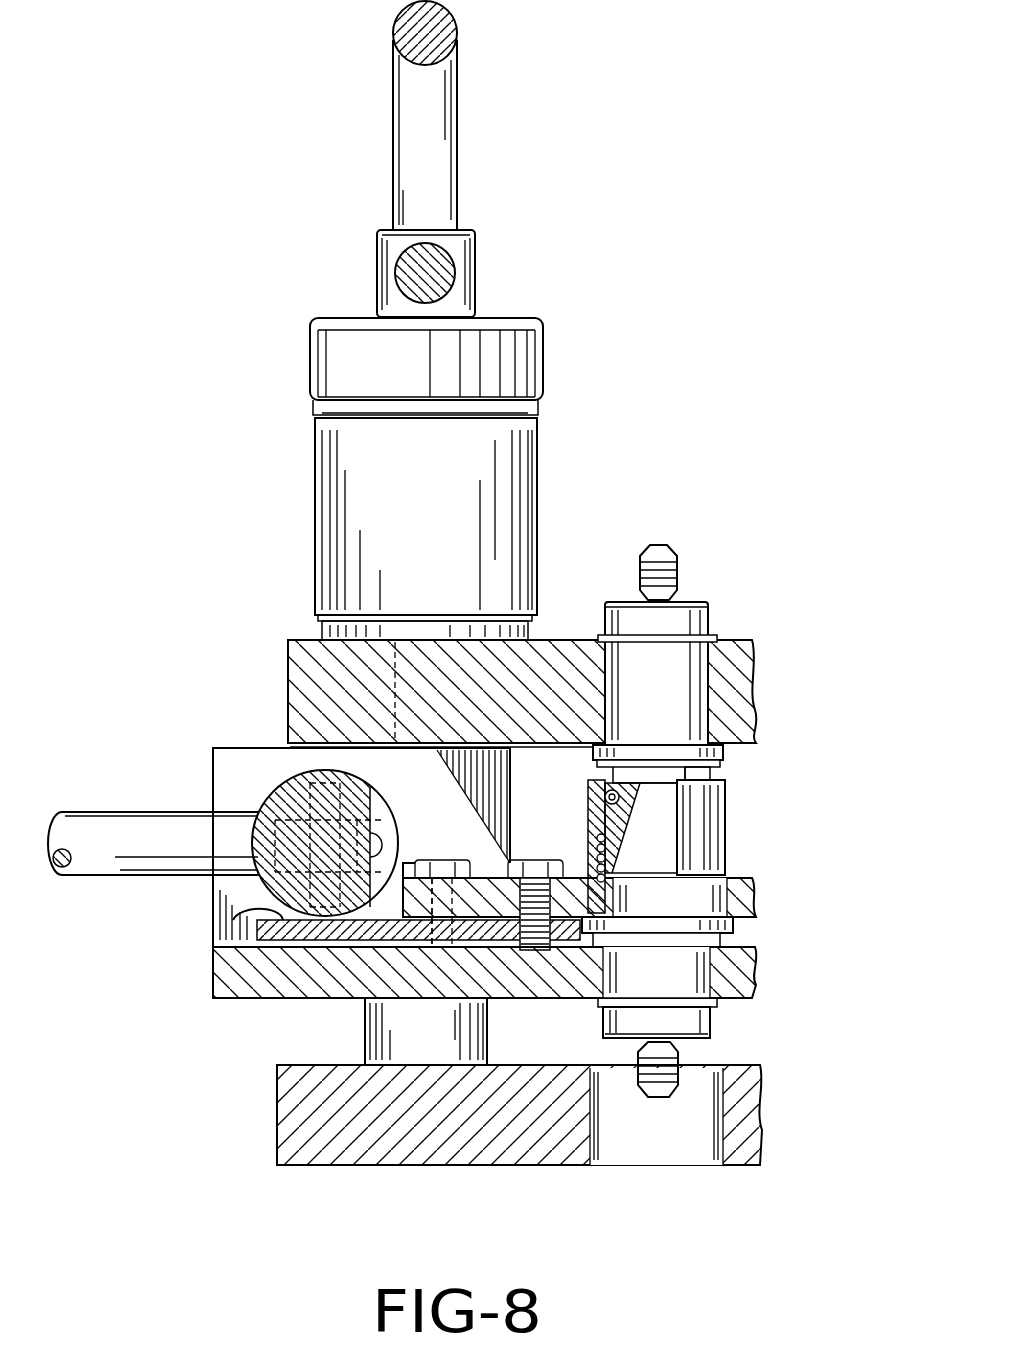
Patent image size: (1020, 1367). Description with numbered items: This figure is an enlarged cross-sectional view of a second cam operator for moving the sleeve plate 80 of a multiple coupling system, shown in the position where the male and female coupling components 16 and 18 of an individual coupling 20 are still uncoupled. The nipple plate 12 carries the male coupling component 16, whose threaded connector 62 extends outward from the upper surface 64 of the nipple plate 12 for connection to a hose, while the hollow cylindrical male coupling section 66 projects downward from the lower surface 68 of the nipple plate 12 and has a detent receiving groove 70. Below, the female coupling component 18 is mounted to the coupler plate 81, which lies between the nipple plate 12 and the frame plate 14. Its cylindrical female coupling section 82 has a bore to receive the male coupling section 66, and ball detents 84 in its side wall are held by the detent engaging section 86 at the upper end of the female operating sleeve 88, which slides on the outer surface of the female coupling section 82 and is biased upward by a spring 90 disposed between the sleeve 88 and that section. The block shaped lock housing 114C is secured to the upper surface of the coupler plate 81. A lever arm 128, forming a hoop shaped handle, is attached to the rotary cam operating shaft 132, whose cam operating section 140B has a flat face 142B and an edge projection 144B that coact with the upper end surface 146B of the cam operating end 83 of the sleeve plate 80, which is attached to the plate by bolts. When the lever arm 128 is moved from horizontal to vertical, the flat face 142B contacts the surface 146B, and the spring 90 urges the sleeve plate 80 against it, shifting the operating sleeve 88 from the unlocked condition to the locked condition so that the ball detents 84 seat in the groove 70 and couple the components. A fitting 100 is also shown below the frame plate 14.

The nipple plate 12 is at (730, 668).
The frame plate 14 is at (755, 1095).
The male coupling component 16 is at (700, 602).
The female coupling component 18 is at (695, 822).
The individual coupling 20 is at (762, 800).
The threaded connector 62 is at (668, 546).
The upper surface 64 is at (552, 640).
The male coupling section 66 is at (660, 770).
The lower surface 68 is at (745, 745).
The detent receiving groove 70 is at (635, 795).
The sleeve plate 80 is at (740, 905).
The coupler plate 81 is at (750, 962).
The female coupling section 82 is at (600, 795).
The cam operating end 83 is at (323, 937).
The ball detents 84 is at (603, 783).
The detent engaging section 86 is at (590, 828).
The female operating sleeve 88 is at (718, 845).
The spring 90 is at (605, 857).
The fitting 100 is at (748, 1065).
The lock housing 114C is at (262, 750).
The lever arm 128 is at (78, 812).
The rotary cam operating shaft 132 is at (290, 775).
The cam operating section 140B is at (287, 802).
The flat face 142B is at (382, 855).
The edge projection 144B is at (382, 905).
The upper end surface 146B is at (330, 887).